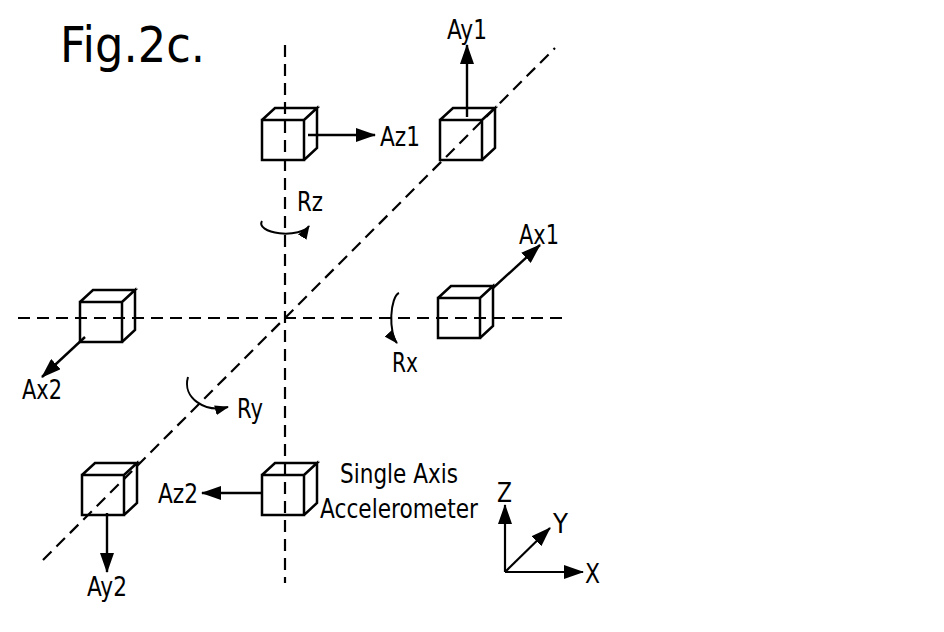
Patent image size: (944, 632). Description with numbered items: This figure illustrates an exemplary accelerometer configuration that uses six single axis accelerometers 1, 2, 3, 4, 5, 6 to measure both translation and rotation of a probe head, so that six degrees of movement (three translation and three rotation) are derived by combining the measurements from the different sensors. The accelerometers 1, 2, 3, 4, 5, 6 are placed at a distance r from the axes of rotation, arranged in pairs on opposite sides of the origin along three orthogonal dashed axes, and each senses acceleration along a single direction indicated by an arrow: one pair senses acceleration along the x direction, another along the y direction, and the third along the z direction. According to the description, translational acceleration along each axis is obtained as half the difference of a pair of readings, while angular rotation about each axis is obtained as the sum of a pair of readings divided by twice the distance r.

The single axis accelerometer 1 (x-axis, sensing Ax1) 1 is at (467, 332).
The single axis accelerometer 2 (sensing Az2) 2 is at (291, 509).
The single axis accelerometer 3 (sensing Ay2) 3 is at (111, 509).
The single axis accelerometer 4 (sensing Ax2) 4 is at (109, 336).
The single axis accelerometer 5 (sensing Az1) 5 is at (291, 154).
The single axis accelerometer 6 (sensing Ay1) 6 is at (469, 154).